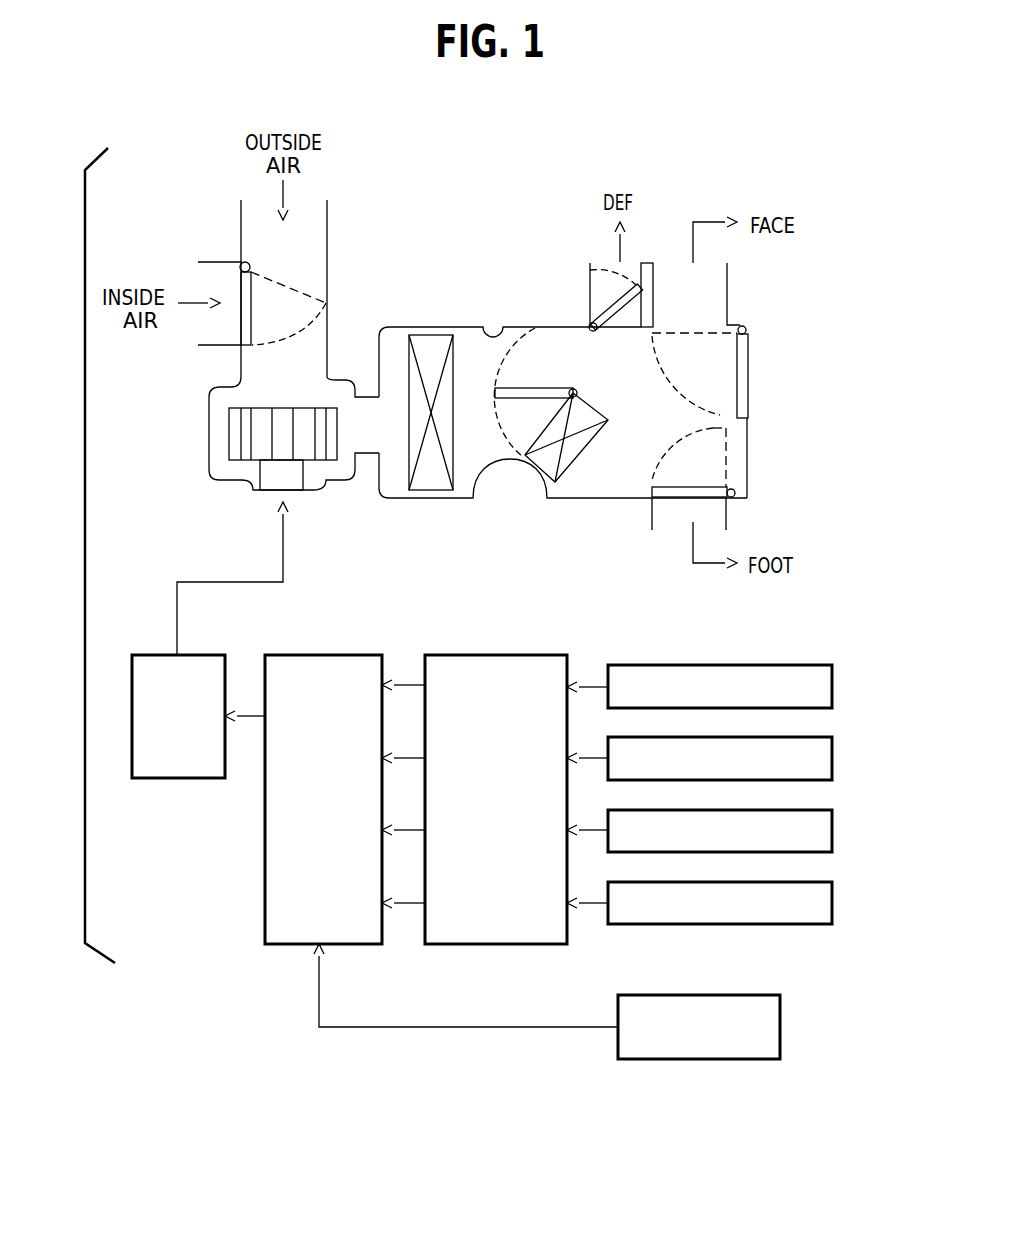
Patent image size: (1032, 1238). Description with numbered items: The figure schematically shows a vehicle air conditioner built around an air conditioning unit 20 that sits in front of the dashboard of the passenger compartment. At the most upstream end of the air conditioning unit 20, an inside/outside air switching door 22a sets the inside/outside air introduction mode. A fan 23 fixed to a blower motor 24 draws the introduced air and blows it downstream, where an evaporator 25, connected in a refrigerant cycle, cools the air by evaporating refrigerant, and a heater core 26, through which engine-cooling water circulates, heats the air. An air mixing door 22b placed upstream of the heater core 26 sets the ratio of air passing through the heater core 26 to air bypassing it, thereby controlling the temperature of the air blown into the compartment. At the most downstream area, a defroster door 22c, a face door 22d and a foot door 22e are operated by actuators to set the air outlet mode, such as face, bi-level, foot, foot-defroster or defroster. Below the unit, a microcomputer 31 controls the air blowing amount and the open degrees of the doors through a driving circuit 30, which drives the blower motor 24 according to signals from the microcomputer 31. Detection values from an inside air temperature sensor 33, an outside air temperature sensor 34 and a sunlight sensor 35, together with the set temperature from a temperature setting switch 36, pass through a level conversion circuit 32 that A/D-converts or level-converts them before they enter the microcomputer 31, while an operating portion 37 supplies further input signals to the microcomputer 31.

The air conditioning unit 20 is at (409, 324).
The inside/outside air switching door 22a is at (240, 293).
The air mixing door 22b is at (537, 387).
The defroster door 22c is at (612, 300).
The face door 22d is at (748, 378).
The foot door 22e is at (700, 487).
The fan 23 is at (229, 432).
The blower motor 24 is at (268, 490).
The evaporator 25 is at (433, 490).
The heater core 26 is at (548, 498).
The driving circuit 30 is at (205, 655).
The microcomputer 31 is at (350, 655).
The level conversion circuit 32 is at (508, 655).
The inside air temperature sensor 33 is at (833, 694).
The outside air temperature sensor 34 is at (833, 766).
The sunlight sensor 35 is at (833, 839).
The temperature setting switch 36 is at (833, 911).
The operating portion 37 is at (738, 995).